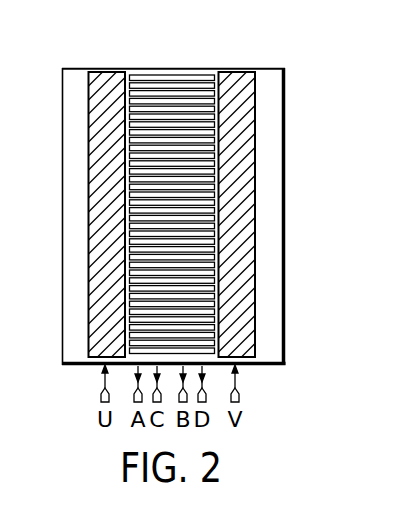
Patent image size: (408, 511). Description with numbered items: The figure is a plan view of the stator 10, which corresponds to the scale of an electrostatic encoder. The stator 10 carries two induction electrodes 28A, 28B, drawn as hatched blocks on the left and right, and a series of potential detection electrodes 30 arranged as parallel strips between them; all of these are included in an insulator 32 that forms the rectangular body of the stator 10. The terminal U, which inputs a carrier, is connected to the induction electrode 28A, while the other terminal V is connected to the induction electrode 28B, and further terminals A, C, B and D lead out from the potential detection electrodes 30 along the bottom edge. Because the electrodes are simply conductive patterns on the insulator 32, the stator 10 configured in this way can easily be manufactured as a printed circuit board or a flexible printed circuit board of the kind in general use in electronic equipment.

The stator 10 is at (192, 206).
The induction electrode 28A is at (109, 73).
The induction electrode 28B is at (240, 73).
The potential detection electrodes 30 is at (163, 73).
The insulator 32 is at (272, 168).